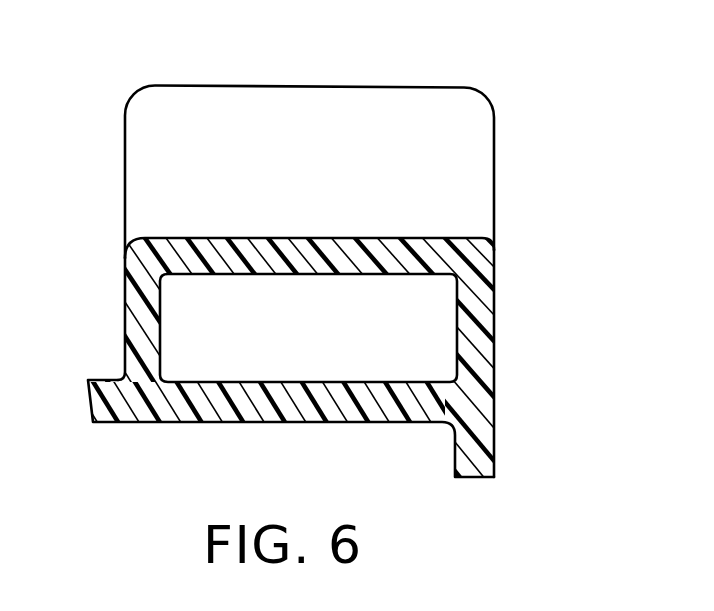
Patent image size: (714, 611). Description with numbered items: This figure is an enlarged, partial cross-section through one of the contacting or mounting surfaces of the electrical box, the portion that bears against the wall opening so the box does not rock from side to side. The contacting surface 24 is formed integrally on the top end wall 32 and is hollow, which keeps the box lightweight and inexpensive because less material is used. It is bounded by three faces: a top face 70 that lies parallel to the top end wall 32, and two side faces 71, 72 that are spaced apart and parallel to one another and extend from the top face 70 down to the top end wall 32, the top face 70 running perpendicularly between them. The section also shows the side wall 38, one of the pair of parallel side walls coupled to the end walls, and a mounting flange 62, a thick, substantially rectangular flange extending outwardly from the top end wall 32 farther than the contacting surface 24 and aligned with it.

The mounting flange 62 is at (417, 87).
The contacting surface 24 is at (495, 282).
The top face 70 is at (345, 238).
The side face 71 is at (125, 296).
The side face 72 is at (495, 325).
The side wall 38 is at (495, 360).
The top end wall 32 is at (330, 382).